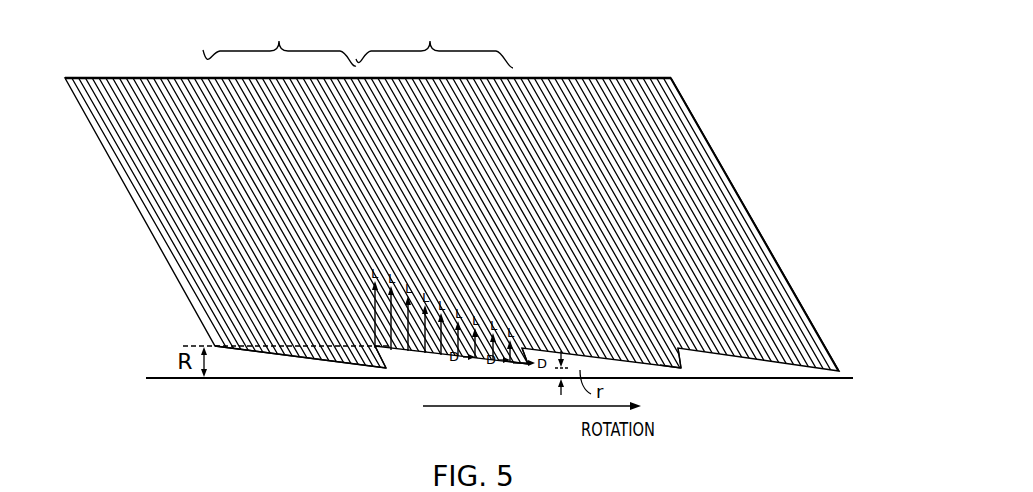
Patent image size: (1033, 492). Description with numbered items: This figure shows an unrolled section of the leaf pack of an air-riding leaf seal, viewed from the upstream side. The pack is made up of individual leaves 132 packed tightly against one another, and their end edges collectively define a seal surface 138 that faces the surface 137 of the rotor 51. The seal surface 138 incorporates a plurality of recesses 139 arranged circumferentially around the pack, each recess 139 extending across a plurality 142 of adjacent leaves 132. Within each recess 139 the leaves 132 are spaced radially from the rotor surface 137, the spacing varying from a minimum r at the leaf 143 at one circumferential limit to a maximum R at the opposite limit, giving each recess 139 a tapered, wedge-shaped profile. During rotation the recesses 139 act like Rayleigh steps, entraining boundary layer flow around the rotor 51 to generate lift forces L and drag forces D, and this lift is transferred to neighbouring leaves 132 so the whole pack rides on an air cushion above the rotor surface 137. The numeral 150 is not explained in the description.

The leaves 132 is at (758, 233).
The rotor surface 137 is at (147, 368).
The seal surface 138 is at (300, 354).
The recesses 139 is at (392, 349).
The plurality of adjacent leaves 142 is at (358, 40).
The leaf at one circumferential limit of the recess 143 is at (521, 368).
The rotary member body 150 is at (712, 121).
The rotor 51 is at (816, 402).